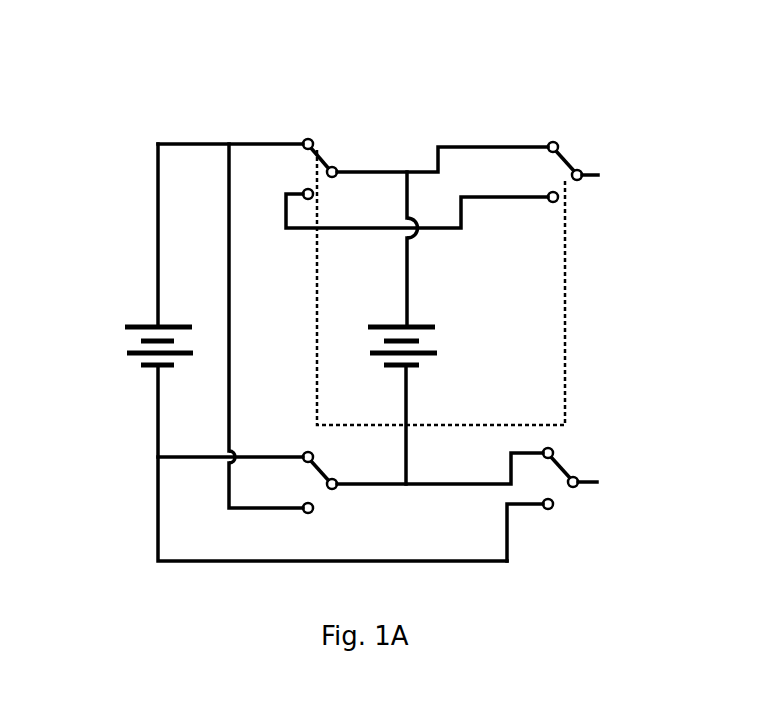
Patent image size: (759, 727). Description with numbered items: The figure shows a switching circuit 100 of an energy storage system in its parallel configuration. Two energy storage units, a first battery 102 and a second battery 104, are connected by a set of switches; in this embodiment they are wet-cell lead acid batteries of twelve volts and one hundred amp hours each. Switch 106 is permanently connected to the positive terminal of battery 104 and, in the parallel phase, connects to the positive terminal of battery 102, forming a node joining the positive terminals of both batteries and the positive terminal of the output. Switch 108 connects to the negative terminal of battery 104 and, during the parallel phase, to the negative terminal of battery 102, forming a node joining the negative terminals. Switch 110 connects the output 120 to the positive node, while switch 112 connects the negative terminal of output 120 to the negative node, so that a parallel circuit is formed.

The switching circuit 100 is at (332, 301).
The first battery 102 is at (149, 354).
The second battery 104 is at (391, 328).
The switch 106 is at (406, 172).
The switch 108 is at (350, 497).
The switch 110 is at (553, 160).
The switch 112 is at (552, 504).
The output 120 is at (613, 458).